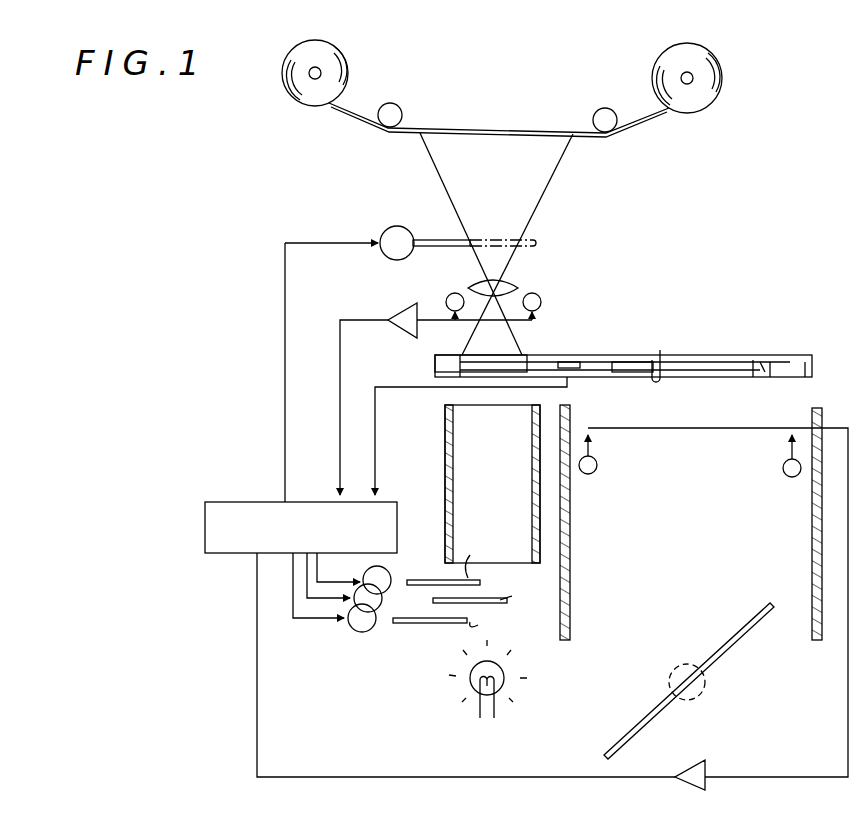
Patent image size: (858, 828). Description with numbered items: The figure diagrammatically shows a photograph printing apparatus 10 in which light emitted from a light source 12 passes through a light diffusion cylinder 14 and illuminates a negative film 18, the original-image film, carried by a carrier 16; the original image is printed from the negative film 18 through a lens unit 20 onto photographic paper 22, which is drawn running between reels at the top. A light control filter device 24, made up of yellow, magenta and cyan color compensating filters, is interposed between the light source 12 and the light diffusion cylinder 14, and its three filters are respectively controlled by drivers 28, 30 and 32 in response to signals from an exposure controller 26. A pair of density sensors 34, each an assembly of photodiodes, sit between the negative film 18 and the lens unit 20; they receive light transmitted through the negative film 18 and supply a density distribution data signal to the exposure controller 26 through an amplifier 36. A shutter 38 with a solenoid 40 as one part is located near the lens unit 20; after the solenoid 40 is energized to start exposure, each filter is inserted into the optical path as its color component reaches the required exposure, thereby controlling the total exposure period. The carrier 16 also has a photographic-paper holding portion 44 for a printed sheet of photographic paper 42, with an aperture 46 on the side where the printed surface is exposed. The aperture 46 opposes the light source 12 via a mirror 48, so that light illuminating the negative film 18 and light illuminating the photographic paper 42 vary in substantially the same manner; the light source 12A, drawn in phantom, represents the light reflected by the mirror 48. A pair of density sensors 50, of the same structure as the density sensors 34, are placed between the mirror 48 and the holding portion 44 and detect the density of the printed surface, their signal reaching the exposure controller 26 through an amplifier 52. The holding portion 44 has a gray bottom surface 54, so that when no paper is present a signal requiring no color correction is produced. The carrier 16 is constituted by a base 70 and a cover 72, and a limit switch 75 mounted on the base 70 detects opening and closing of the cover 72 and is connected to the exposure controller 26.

The photograph printing apparatus 10 is at (753, 142).
The light source 12 is at (468, 678).
The light source (phantom) 12A is at (675, 666).
The light diffusion cylinder 14 is at (445, 450).
The carrier 16 is at (714, 355).
The negative film 18 is at (505, 355).
The lens unit 20 is at (515, 285).
The photographic paper 22 is at (519, 130).
The light control filter device 24 is at (415, 625).
The exposure controller 26 is at (232, 502).
The driver 28 is at (352, 628).
The driver 30 is at (360, 590).
The driver 32 is at (385, 578).
The density sensors 34 is at (452, 293).
The amplifier 36 is at (392, 310).
The shutter 38 is at (436, 240).
The solenoid 40 is at (397, 226).
The photographic paper 42 is at (628, 372).
The photographic-paper holding portion 44 is at (710, 388).
The aperture 46 is at (765, 372).
The mirror 48 is at (727, 640).
The density sensors 50 is at (597, 465).
The amplifier 52 is at (700, 760).
The gray bottom surface 54 is at (658, 354).
The base 70 is at (806, 372).
The cover 72 is at (787, 362).
The limit switch 75 is at (575, 360).